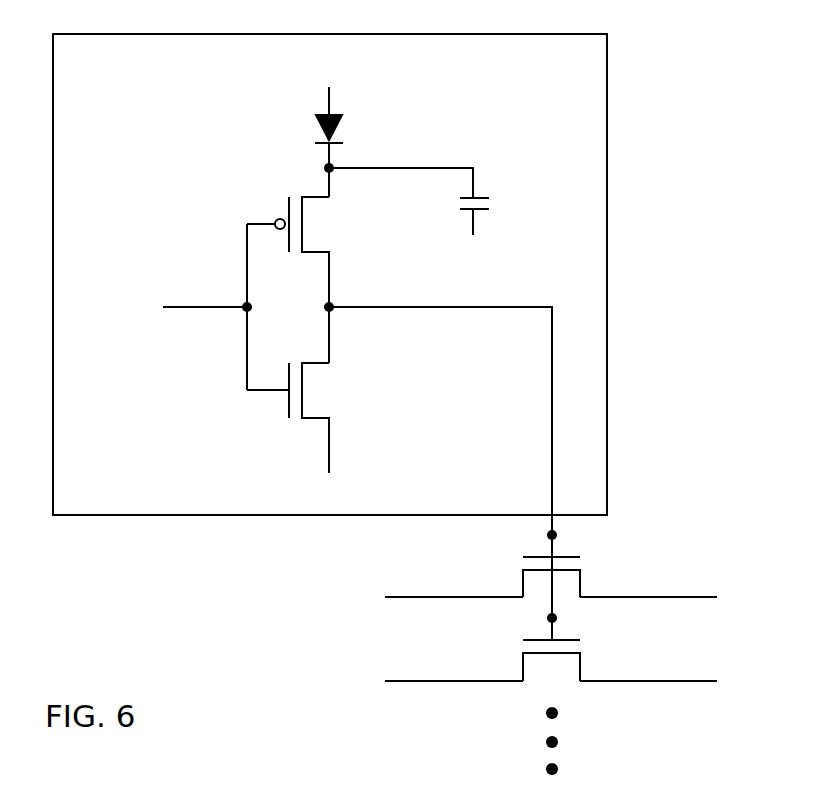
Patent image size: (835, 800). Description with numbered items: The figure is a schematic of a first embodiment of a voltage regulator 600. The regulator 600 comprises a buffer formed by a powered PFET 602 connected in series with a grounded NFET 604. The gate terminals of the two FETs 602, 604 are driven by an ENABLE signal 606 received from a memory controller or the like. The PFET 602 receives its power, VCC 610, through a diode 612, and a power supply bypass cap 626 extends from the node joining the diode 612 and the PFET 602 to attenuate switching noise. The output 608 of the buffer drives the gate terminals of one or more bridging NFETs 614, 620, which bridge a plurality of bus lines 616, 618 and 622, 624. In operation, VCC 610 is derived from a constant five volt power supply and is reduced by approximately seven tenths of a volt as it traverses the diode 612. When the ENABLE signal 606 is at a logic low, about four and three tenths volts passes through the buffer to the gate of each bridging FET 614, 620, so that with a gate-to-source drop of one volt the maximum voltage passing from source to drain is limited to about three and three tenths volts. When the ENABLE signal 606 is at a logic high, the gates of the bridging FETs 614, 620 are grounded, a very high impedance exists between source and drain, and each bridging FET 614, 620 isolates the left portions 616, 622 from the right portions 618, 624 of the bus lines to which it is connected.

The voltage regulator 600 is at (608, 212).
The VCC 610 is at (330, 99).
The diode 612 is at (317, 122).
The PFET 602 is at (315, 222).
The NFET 604 is at (330, 391).
The ENABLE signal 606 is at (193, 308).
The output 608 is at (412, 310).
The power supply bypass cap 626 is at (490, 206).
The bridging NFET 614 is at (580, 583).
The bus line 616 is at (441, 596).
The bus line 618 is at (703, 598).
The bridging NFET 620 is at (580, 667).
The bus line 622 is at (441, 680).
The bus line 624 is at (703, 681).